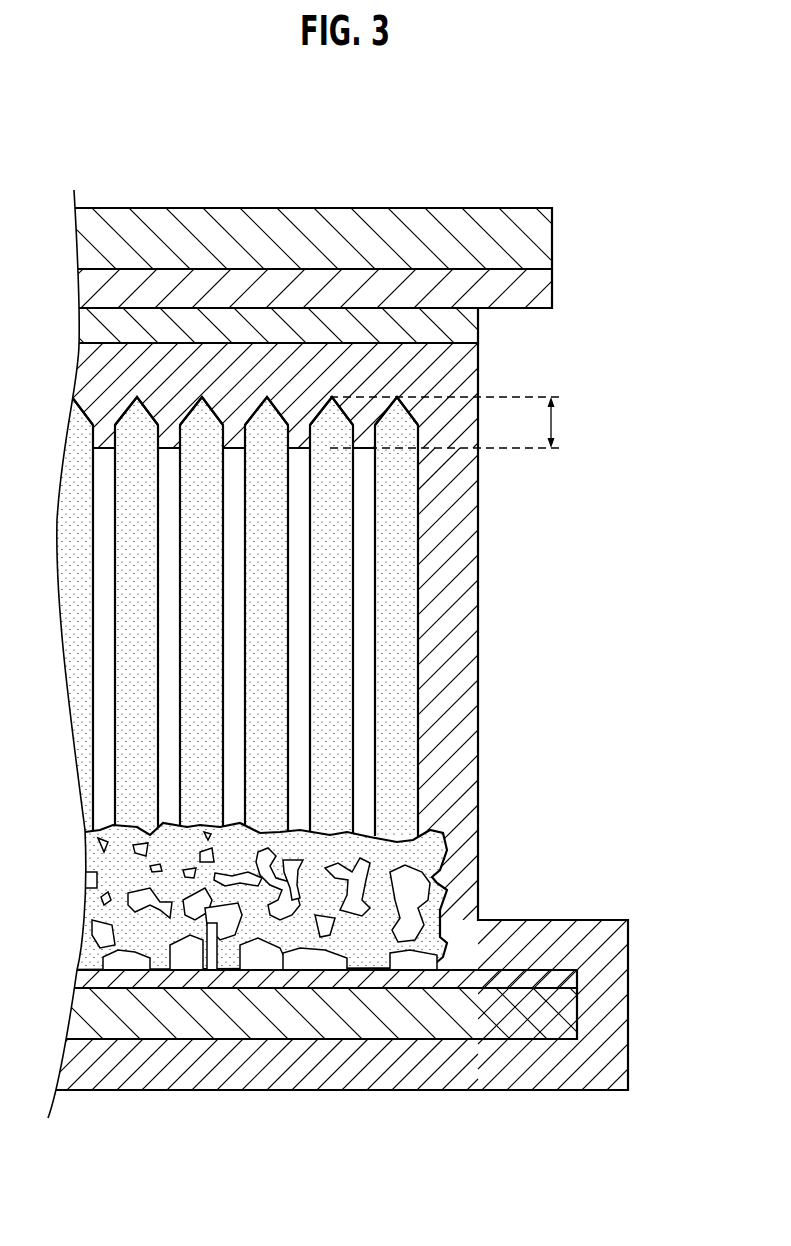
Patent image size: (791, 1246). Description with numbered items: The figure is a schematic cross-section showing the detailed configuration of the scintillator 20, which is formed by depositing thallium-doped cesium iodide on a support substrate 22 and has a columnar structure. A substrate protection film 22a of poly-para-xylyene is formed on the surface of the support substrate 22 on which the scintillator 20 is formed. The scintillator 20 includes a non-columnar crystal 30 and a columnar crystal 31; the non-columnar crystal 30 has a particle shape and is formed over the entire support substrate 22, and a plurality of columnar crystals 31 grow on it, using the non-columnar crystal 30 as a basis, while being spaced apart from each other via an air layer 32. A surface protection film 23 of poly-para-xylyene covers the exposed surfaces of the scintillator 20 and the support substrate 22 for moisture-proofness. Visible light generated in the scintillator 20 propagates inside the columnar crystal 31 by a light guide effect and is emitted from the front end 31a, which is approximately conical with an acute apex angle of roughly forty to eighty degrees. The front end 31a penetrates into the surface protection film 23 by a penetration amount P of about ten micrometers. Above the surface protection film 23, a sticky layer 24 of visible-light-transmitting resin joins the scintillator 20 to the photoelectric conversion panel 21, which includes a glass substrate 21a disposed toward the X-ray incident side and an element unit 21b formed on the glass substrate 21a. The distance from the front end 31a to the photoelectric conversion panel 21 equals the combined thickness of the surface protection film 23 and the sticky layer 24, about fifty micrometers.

The scintillator 20 is at (342, 683).
The photoelectric conversion panel 21 is at (363, 258).
The glass substrate 21a is at (538, 240).
The element unit 21b is at (538, 288).
The support substrate 22 is at (550, 1013).
The substrate protection film 22a is at (560, 978).
The surface protection film 23 is at (452, 548).
The sticky layer 24 is at (455, 327).
The non-columnar crystal 30 is at (437, 852).
The columnar crystal 31 is at (314, 616).
The front end 31a is at (398, 420).
The air layer 32 is at (365, 678).
The penetration amount P is at (453, 422).